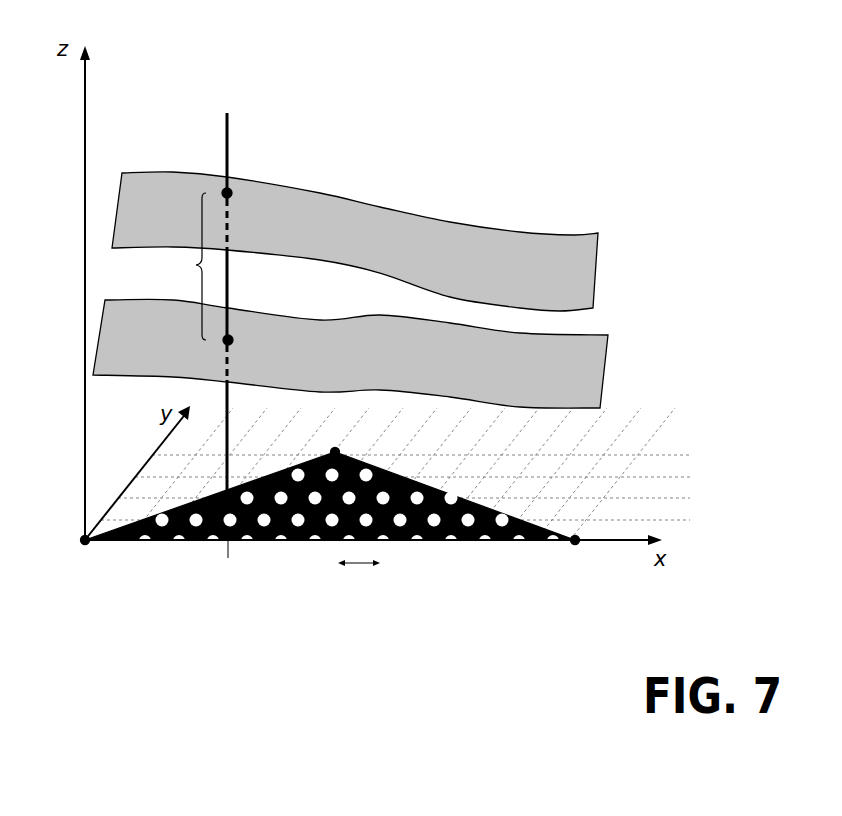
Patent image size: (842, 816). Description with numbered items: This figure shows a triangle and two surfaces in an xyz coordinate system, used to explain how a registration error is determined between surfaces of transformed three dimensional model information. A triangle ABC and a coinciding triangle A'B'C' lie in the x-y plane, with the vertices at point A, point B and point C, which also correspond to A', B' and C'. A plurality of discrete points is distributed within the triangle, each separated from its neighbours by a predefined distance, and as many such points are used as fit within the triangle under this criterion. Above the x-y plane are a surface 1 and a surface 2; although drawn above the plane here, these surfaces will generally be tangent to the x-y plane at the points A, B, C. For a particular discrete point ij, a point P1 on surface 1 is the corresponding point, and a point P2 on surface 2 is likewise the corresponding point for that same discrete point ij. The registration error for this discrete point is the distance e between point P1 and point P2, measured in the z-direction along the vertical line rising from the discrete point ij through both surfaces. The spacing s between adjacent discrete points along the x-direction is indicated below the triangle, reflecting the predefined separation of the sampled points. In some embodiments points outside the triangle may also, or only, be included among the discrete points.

The surface 1 is at (355, 241).
The surface 2 is at (350, 353).
The point A is at (68, 559).
The point B is at (572, 559).
The point C is at (330, 485).
The point P1 is at (253, 202).
The point P2 is at (255, 347).
The discrete point i,j ij is at (235, 352).
The registration error e_ij e is at (181, 266).
The sampling step s_T s is at (359, 579).